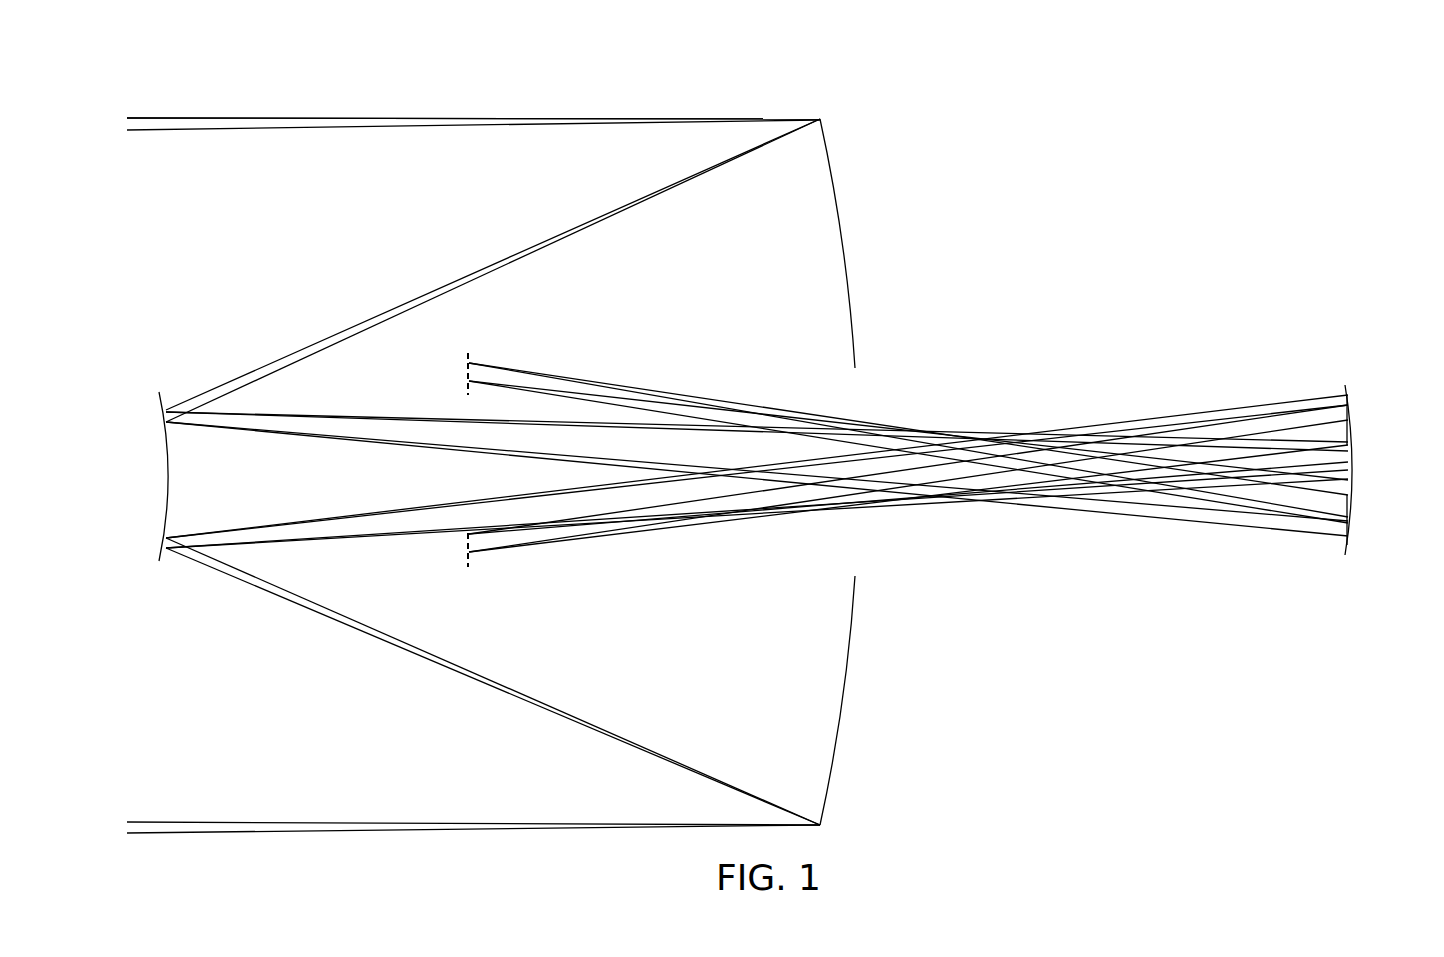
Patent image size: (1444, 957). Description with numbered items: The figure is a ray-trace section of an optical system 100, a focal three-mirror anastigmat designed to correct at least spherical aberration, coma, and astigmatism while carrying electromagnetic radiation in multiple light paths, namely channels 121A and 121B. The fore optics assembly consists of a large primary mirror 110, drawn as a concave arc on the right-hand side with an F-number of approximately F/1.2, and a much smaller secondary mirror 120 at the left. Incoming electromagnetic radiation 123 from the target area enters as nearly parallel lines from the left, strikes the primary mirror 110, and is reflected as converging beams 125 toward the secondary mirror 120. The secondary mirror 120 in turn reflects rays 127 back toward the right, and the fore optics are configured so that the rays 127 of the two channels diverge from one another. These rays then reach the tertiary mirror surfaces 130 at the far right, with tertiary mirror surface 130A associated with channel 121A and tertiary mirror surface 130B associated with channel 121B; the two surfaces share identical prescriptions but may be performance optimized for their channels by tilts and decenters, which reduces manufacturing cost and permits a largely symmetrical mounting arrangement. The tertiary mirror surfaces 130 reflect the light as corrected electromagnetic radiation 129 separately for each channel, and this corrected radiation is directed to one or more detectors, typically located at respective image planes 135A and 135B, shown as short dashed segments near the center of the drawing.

The optical system 100 is at (1080, 168).
The primary mirror 110 is at (838, 752).
The secondary mirror 120 is at (166, 477).
The channel 121A is at (279, 118).
The channel 121B is at (279, 130).
The incoming electromagnetic radiation 123 is at (190, 105).
The beams 125 is at (427, 270).
The rays 127 is at (372, 405).
The corrected electromagnetic radiation 129 is at (632, 375).
The tertiary mirror surfaces 130 is at (1378, 477).
The tertiary mirror surface 130A is at (1351, 422).
The tertiary mirror surface 130B is at (1351, 515).
The image plane 135A is at (474, 570).
The image plane 135B is at (472, 349).